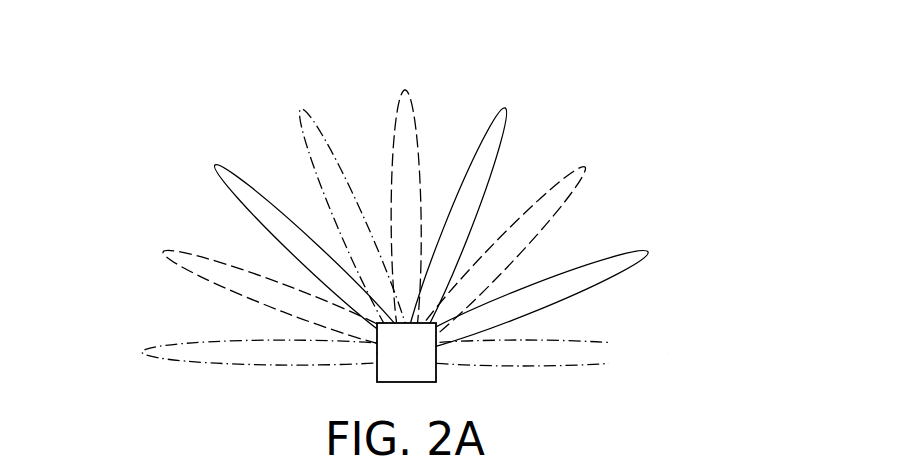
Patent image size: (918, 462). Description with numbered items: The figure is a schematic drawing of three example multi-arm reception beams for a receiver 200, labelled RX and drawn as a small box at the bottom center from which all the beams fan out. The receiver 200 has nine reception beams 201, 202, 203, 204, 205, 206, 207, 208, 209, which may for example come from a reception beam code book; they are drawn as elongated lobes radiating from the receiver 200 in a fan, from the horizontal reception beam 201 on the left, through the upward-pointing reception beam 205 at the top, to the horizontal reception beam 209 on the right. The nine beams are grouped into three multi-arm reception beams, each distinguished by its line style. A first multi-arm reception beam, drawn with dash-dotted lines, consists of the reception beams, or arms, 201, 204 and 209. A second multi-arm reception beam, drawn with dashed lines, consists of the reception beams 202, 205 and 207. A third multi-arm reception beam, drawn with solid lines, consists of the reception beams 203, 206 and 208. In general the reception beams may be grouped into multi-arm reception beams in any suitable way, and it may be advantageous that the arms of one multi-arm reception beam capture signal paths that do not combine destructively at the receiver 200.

The receiver (RX) 200 is at (406, 352).
The reception beam 201 is at (155, 345).
The reception beam 202 is at (170, 251).
The reception beam 203 is at (222, 163).
The reception beam 204 is at (303, 106).
The reception beam 205 is at (405, 90).
The reception beam 206 is at (508, 108).
The reception beam 207 is at (582, 166).
The reception beam 208 is at (642, 250).
The reception beam 209 is at (656, 352).